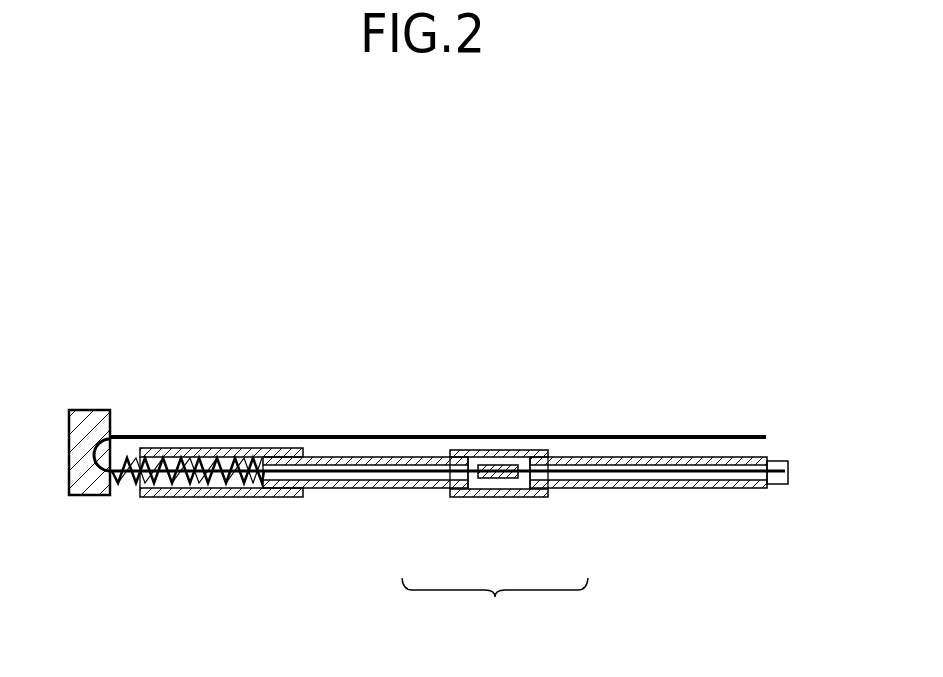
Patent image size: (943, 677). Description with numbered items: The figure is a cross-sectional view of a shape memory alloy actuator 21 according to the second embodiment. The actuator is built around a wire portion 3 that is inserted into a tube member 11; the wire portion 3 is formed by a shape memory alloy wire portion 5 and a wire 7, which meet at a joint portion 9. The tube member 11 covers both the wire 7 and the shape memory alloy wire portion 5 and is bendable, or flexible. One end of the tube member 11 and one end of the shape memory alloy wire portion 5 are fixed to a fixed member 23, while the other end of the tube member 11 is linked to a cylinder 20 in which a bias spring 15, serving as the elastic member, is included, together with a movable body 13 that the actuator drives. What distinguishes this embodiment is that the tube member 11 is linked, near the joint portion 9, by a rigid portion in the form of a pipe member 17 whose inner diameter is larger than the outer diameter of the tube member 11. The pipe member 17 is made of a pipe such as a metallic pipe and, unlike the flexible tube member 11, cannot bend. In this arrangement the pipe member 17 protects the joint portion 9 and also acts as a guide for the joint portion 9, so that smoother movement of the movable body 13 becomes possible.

The wire portion 3 is at (495, 606).
The shape memory alloy wire portion 5 is at (575, 490).
The wire 7 is at (415, 490).
The joint portion 9 is at (492, 450).
The tube member 11 is at (348, 457).
The movable body 13 is at (86, 410).
The bias spring 15 is at (125, 485).
The pipe member 17 is at (541, 450).
The cylinder 20 is at (197, 448).
The shape memory alloy actuator 21 is at (707, 364).
The fixed member 23 is at (781, 461).